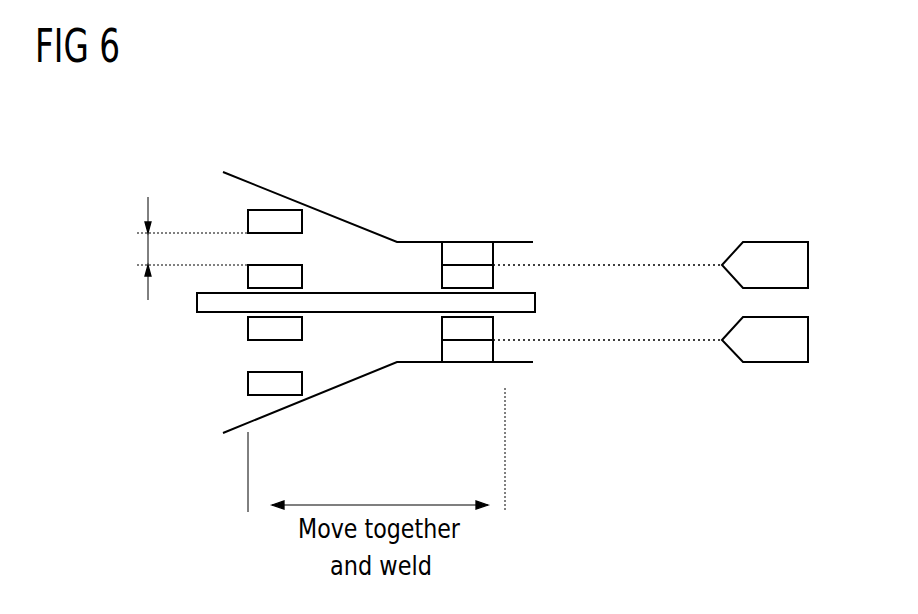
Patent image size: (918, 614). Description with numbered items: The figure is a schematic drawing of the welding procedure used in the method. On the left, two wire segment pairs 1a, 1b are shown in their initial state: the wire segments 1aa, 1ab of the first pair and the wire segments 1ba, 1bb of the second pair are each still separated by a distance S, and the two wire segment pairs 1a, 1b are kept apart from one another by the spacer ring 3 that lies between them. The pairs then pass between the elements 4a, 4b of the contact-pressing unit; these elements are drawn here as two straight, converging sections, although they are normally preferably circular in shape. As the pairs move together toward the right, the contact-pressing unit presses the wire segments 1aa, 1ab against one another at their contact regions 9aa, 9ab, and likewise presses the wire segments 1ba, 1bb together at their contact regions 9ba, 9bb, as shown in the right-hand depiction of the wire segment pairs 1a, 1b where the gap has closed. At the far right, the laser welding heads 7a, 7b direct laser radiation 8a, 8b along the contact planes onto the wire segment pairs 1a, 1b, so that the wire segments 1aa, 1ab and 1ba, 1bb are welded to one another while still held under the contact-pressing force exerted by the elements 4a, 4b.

The wire segment pair 1a is at (470, 340).
The wire segment 1aa is at (272, 388).
The wire segment 1ab is at (287, 330).
The wire segment pair 1b is at (468, 260).
The wire segment 1ba is at (287, 273).
The wire segment 1bb is at (263, 217).
The spacer ring 3 is at (338, 302).
The element of the contact-pressing unit 4a is at (370, 378).
The element of the contact-pressing unit 4b is at (370, 230).
The laser welding head 7a is at (775, 355).
The laser welding head 7b is at (775, 248).
The laser radiation 8a is at (625, 343).
The laser radiation 8b is at (625, 263).
The contact region 9aa is at (257, 373).
The contact region 9ab is at (257, 342).
The contact region 9ba is at (257, 265).
The contact region 9bb is at (257, 236).
The distance S is at (183, 248).